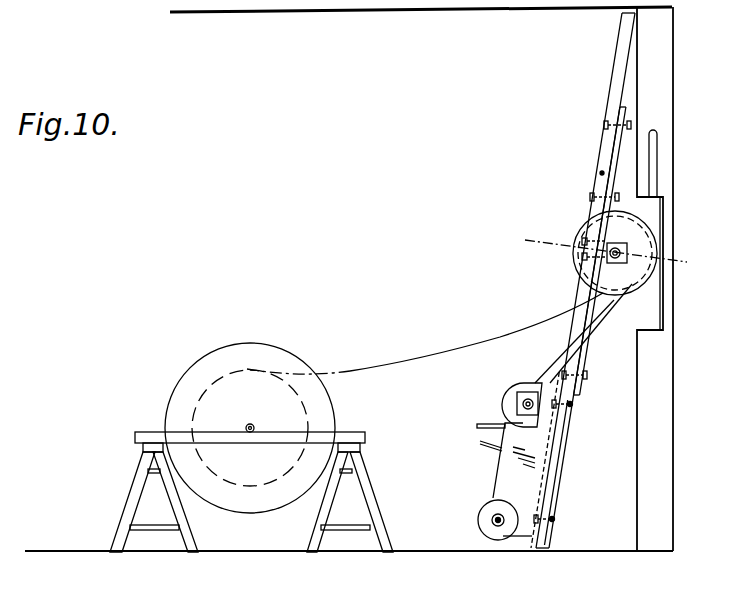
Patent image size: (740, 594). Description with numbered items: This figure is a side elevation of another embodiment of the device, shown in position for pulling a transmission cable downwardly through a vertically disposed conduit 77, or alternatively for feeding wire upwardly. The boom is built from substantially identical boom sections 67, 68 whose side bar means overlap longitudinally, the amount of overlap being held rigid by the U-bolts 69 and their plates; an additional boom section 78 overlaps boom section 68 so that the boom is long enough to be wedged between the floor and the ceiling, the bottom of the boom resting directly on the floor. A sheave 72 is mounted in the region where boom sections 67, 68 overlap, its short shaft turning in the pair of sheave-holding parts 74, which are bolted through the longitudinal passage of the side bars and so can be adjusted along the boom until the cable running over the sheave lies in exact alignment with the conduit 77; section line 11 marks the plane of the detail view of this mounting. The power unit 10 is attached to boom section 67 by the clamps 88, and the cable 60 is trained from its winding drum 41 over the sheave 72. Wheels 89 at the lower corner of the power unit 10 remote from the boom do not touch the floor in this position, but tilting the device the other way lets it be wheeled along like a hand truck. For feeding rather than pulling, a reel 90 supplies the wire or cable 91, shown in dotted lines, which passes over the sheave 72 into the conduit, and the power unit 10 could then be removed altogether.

The power unit 10 is at (486, 483).
The section line 11- 11 is at (567, 213).
The winding drum 41 is at (520, 385).
The cable 60 is at (560, 362).
The boom section 67 is at (563, 458).
The boom section 68 is at (590, 358).
The U-bolts 69 is at (604, 125).
The sheave 72 is at (628, 290).
The sheave-holding parts 74 is at (628, 262).
The conduit 77 is at (653, 173).
The boom section 78 is at (595, 98).
The clamps 88 is at (571, 405).
The wheels 89 is at (483, 518).
The reel 90 is at (197, 365).
The wire or cable 91 is at (367, 368).